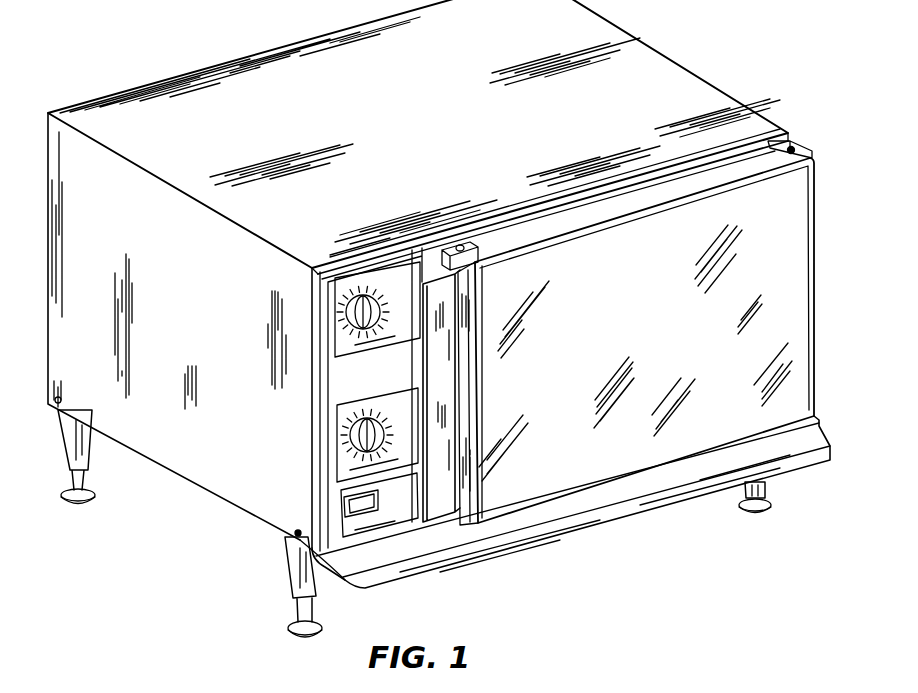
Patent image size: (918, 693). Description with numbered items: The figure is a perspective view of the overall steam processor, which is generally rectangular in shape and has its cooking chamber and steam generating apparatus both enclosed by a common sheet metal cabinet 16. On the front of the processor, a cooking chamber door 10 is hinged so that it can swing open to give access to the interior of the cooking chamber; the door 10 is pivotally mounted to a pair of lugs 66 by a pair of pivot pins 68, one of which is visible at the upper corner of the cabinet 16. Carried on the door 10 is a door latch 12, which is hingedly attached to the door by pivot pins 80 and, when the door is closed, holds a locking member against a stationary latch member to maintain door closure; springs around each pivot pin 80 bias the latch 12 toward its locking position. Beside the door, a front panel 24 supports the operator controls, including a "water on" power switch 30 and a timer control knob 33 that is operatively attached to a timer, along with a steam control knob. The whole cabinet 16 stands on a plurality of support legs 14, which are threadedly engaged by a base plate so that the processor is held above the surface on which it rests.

The cooking chamber door 10 is at (636, 345).
The door latch 12 is at (431, 408).
The support legs 14 is at (296, 612).
The sheet metal cabinet 16 is at (388, 131).
The front panel 24 is at (377, 399).
The "water on" power switch 30 is at (380, 497).
The timer control knob 33 is at (372, 309).
The lugs 66 is at (806, 155).
The pivot pins 68 is at (794, 147).
The pivot pins 80 is at (466, 248).